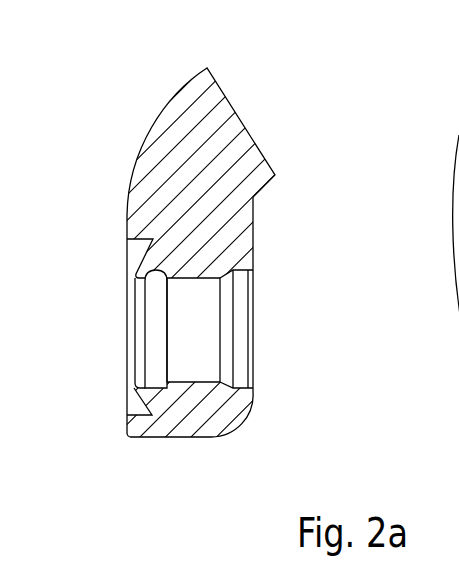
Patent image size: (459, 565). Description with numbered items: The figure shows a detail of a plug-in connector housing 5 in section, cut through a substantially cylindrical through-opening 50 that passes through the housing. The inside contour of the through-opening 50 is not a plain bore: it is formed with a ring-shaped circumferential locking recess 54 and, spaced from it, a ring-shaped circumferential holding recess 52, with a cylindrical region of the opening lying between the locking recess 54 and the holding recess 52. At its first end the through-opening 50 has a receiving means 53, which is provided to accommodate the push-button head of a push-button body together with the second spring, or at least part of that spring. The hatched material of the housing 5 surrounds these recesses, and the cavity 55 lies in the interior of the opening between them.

The plug-in connector housing 5 is at (150, 95).
The through-opening 50 is at (258, 286).
The holding recess 52 is at (157, 313).
The receiving means 53 is at (137, 250).
The locking recess 54 is at (243, 337).
The cavity 55 is at (190, 340).